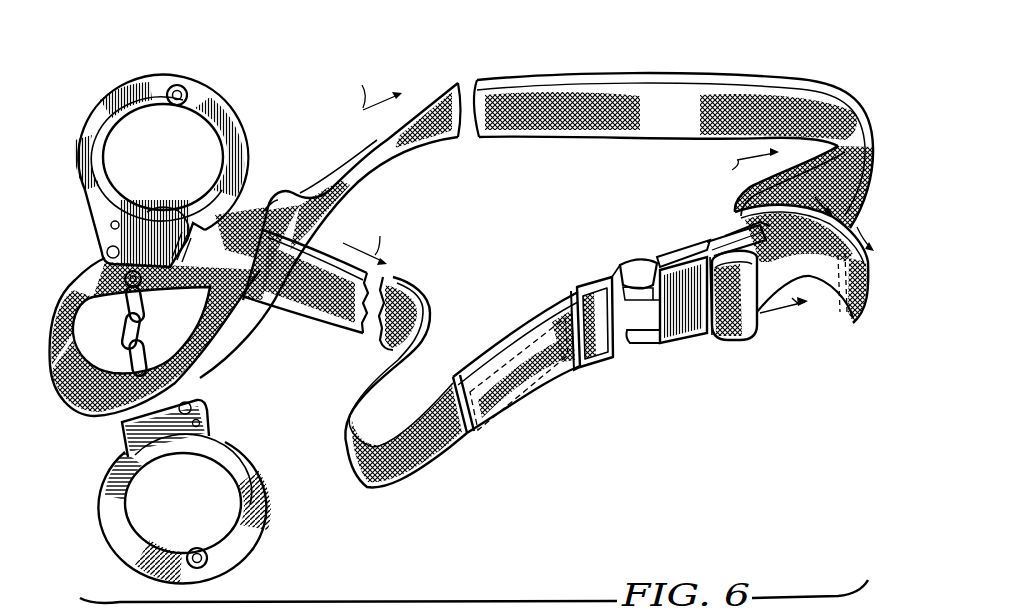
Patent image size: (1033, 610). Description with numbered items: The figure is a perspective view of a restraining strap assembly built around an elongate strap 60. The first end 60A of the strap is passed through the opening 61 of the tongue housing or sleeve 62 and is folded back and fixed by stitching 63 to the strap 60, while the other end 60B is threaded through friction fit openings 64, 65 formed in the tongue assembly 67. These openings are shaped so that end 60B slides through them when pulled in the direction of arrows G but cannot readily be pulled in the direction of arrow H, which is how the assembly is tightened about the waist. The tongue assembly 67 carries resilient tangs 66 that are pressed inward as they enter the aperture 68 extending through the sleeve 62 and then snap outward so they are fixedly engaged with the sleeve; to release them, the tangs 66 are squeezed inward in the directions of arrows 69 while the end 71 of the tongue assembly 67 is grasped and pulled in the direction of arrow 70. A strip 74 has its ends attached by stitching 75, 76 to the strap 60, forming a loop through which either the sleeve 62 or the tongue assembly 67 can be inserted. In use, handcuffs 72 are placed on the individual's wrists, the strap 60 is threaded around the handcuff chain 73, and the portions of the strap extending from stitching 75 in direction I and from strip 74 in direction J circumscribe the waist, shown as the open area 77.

The elongate strap 60 is at (659, 78).
The first end of strap 60A is at (478, 405).
The second end of strap 60B is at (832, 284).
The opening of tongue housing 61 is at (603, 366).
The tongue housing or sleeve 62 is at (680, 341).
The stitching 63 is at (540, 337).
The friction fit opening 64 is at (708, 244).
The friction fit opening 65 is at (738, 230).
The resilient tangs 66 is at (625, 272).
The tongue assembly 67 is at (710, 326).
The aperture 68 is at (660, 252).
The arrows 69 is at (637, 266).
The arrow 70 is at (784, 296).
The end of tongue assembly 71 is at (706, 278).
The handcuffs 72 is at (236, 116).
The handcuff chain 73 is at (147, 360).
The strip 74 is at (262, 198).
The stitching 75 is at (312, 182).
The stitching 76 is at (212, 320).
The open area 77 is at (494, 226).